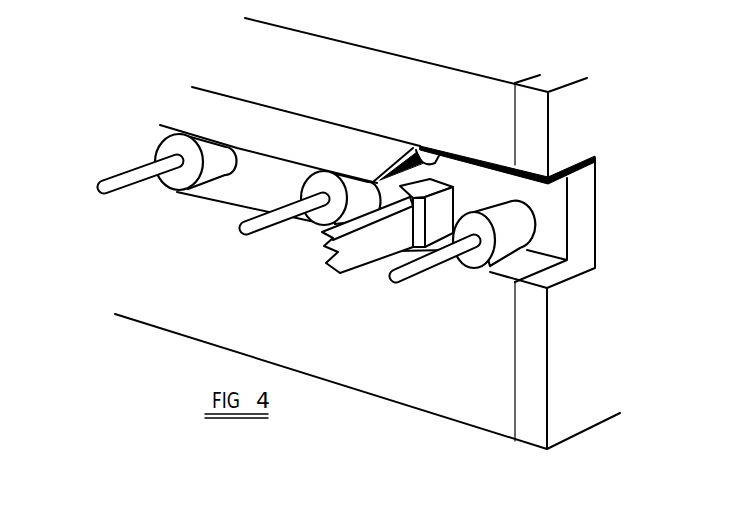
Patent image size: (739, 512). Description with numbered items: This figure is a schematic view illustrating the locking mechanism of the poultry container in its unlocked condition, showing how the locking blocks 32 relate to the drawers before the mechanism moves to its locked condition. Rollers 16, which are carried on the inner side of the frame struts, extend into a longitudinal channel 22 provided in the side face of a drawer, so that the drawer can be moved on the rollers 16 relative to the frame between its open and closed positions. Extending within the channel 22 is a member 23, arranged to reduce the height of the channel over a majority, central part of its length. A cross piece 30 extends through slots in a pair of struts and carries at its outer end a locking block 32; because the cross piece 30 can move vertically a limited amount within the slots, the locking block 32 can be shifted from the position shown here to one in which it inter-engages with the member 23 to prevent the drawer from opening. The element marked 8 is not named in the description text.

The support bar 8 is at (367, 349).
The roller 16 is at (500, 243).
The longitudinal channel 22 is at (582, 258).
The member 23 is at (446, 153).
The cross piece 30 is at (356, 247).
The locking block 32 is at (445, 210).